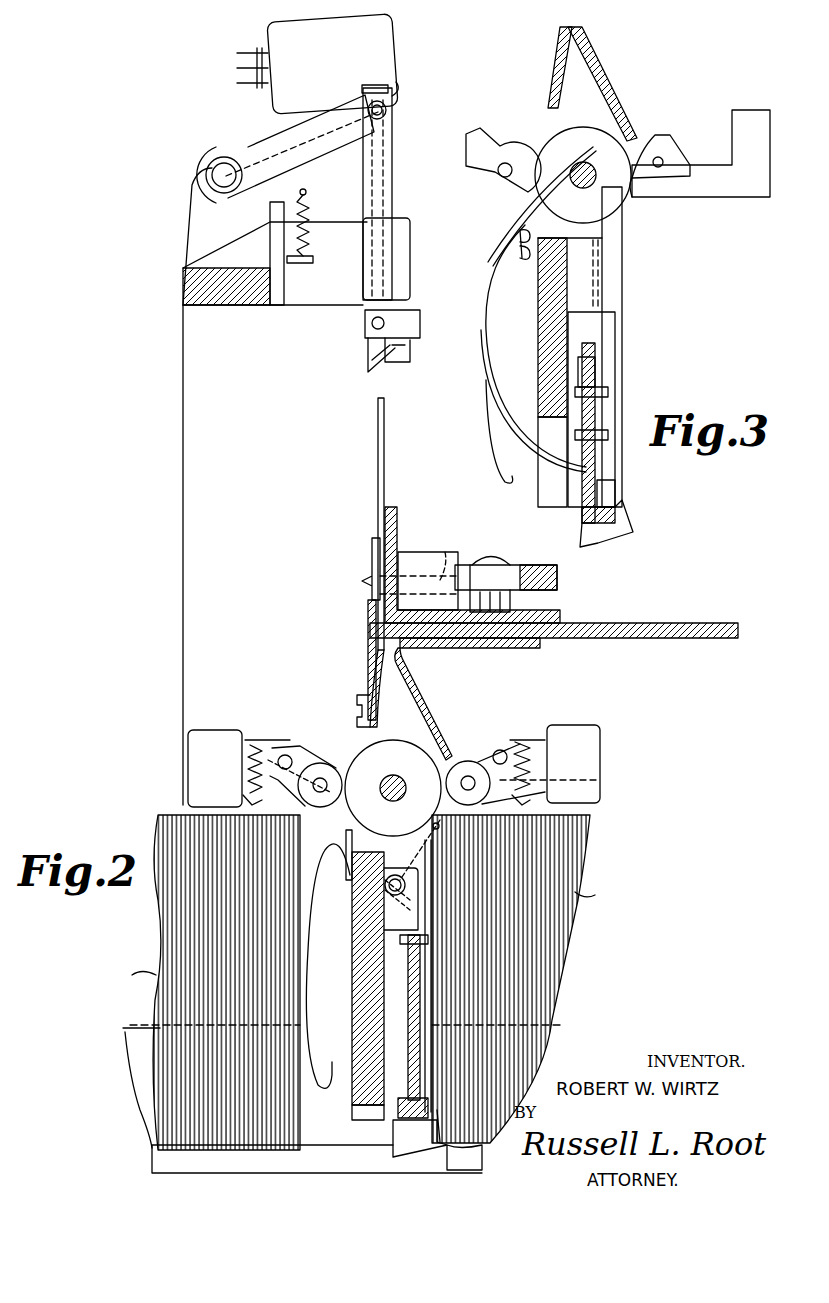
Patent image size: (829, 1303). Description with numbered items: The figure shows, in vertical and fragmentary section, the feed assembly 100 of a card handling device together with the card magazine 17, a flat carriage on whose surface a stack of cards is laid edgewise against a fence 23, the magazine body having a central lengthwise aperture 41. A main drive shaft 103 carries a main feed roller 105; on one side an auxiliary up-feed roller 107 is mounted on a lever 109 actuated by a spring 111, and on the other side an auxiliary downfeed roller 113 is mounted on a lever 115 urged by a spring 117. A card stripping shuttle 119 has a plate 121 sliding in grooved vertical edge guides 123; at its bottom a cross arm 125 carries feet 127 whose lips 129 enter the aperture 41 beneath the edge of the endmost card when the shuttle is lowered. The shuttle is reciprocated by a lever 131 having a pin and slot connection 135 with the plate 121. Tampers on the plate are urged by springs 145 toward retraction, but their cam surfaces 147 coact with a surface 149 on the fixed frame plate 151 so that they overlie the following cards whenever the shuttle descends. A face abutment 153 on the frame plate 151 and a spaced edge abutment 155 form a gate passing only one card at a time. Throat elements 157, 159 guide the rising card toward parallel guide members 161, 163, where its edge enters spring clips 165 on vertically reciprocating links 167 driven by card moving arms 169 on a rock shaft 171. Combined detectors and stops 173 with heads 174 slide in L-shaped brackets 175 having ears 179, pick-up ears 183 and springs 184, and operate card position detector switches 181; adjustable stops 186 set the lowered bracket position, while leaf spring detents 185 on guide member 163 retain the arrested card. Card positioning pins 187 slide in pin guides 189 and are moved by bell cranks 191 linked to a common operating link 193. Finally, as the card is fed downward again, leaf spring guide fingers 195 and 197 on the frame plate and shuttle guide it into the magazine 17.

In FIG. 2, the card magazine 17 is at (155, 1160).
In FIG. 2, the fence 23 is at (545, 1030).
In FIG. 2, the central lengthwise-extending aperture 41 is at (260, 1173).
In FIG. 2, the feed assembly 100 is at (167, 356).
In FIG. 3, the main drive shaft 103 is at (583, 188).
In FIG. 2, the main feed roller 105 is at (350, 745).
In FIG. 3, the main feed roller 105 is at (553, 140).
In FIG. 2, the auxiliary up-feed roller 107 is at (457, 760).
In FIG. 3, the auxiliary up-feed roller 107 is at (650, 140).
In FIG. 2, the lever 109 is at (500, 740).
In FIG. 2, the spring 111 is at (590, 775).
In FIG. 2, the auxiliary downfeed roller 113 is at (338, 762).
In FIG. 3, the auxiliary downfeed roller 113 is at (495, 190).
In FIG. 2, the lever 115 is at (288, 735).
In FIG. 2, the spring 117 is at (235, 792).
In FIG. 2, the card stripping shuttle 119 is at (378, 1138).
In FIG. 3, the card stripping shuttle 119 is at (573, 515).
In FIG. 2, the plate 121 is at (425, 1005).
In FIG. 3, the plate 121 is at (600, 408).
In FIG. 2, the grooved vertical edge guide 123 is at (430, 978).
In FIG. 3, the grooved vertical edge guide 123 is at (615, 333).
In FIG. 2, the cross arm 125 is at (365, 1105).
In FIG. 3, the cross arm 125 is at (615, 490).
In FIG. 2, the foot 127 is at (396, 1160).
In FIG. 3, the foot 127 is at (620, 515).
In FIG. 2, the lip 129 is at (448, 1165).
In FIG. 3, the lip 129 is at (633, 535).
In FIG. 3, the lever 131 is at (595, 368).
In FIG. 3, the pin and slot connection 135 is at (597, 385).
In FIG. 2, the spring 145 is at (440, 840).
In FIG. 2, the cam surface 147 is at (355, 878).
In FIG. 2, the surface 149 is at (370, 860).
In FIG. 2, the fixed frame plate 151 is at (355, 962).
In FIG. 3, the fixed frame plate 151 is at (538, 335).
In FIG. 3, the face abutment 153 is at (620, 233).
In FIG. 3, the edge abutment 155 is at (705, 195).
In FIG. 2, the throat element 157 is at (402, 672).
In FIG. 3, the throat element 157 is at (590, 55).
In FIG. 2, the throat element 159 is at (370, 670).
In FIG. 3, the throat element 159 is at (556, 40).
In FIG. 2, the guide member 161 is at (398, 530).
In FIG. 2, the guide member 163 is at (370, 552).
In FIG. 2, the spring clip 165 is at (392, 370).
In FIG. 2, the vertically reciprocating link 167 is at (393, 200).
In FIG. 2, the card moving arm 169 is at (262, 138).
In FIG. 2, the rock shaft 171 is at (212, 172).
In FIG. 2, the combined detector and stop 173 is at (393, 143).
In FIG. 2, the head 174 is at (408, 375).
In FIG. 2, the L-shaped bracket 175 is at (404, 190).
In FIG. 2, the ear 179 is at (405, 355).
In FIG. 2, the card position detector switch 181 is at (385, 34).
In FIG. 2, the pick-up ear 183 is at (388, 86).
In FIG. 2, the spring 184 is at (312, 212).
In FIG. 2, the leaf spring detent 185 is at (368, 638).
In FIG. 2, the adjustable stop 186 is at (280, 298).
In FIG. 2, the card positioning pin 187 is at (452, 556).
In FIG. 2, the pin guide 189 is at (410, 552).
In FIG. 2, the bell crank 191 is at (530, 565).
In FIG. 2, the operating link 193 is at (557, 587).
In FIG. 2, the leaf spring guide finger 195 is at (325, 925).
In FIG. 3, the leaf spring guide finger 195 is at (492, 440).
In FIG. 3, the leaf spring guide finger 197 is at (495, 242).